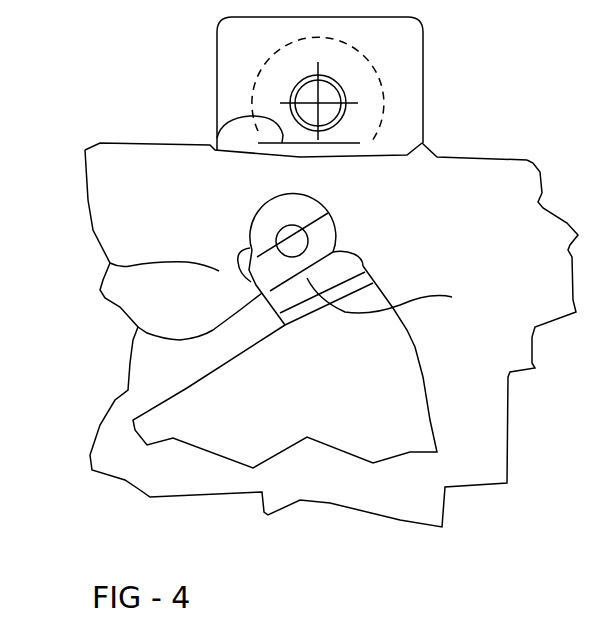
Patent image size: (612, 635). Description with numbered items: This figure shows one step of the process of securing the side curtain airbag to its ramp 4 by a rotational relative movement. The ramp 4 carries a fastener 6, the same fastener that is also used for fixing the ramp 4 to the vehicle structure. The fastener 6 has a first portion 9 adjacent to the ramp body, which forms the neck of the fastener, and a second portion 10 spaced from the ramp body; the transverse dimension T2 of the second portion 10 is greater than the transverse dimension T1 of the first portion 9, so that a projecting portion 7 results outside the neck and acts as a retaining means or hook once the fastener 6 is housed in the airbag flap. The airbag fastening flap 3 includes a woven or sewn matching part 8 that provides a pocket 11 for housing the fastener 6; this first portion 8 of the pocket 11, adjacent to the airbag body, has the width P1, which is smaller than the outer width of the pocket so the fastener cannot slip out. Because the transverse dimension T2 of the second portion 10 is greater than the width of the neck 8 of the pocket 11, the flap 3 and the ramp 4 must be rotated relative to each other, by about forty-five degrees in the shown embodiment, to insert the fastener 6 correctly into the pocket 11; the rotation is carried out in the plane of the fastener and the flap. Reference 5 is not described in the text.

The fastening flap 3 is at (408, 63).
The ramp 4 is at (458, 393).
The cam plate 5 is at (370, 437).
The fastener 6 is at (138, 322).
The projecting portion 7 is at (340, 207).
The first portion of pocket 8 is at (412, 116).
The first portion 9 is at (350, 243).
The second portion 10 is at (110, 263).
The pocket 11 is at (266, 76).
The transverse dimension of first pocket portion P1 is at (216, 122).
The transverse dimension of first portion T1 is at (397, 295).
The transverse dimension of second portion T2 is at (256, 255).